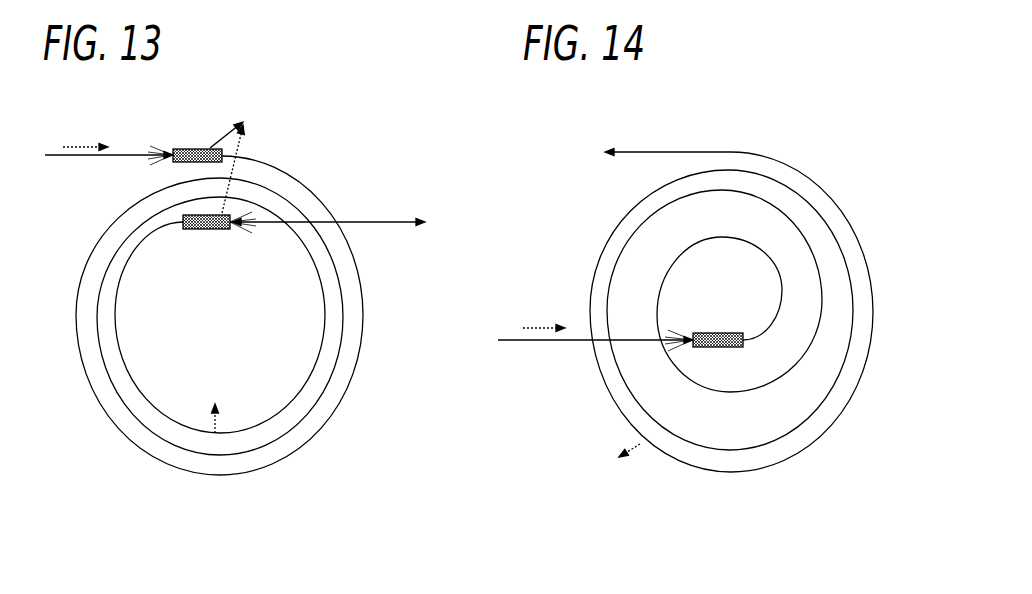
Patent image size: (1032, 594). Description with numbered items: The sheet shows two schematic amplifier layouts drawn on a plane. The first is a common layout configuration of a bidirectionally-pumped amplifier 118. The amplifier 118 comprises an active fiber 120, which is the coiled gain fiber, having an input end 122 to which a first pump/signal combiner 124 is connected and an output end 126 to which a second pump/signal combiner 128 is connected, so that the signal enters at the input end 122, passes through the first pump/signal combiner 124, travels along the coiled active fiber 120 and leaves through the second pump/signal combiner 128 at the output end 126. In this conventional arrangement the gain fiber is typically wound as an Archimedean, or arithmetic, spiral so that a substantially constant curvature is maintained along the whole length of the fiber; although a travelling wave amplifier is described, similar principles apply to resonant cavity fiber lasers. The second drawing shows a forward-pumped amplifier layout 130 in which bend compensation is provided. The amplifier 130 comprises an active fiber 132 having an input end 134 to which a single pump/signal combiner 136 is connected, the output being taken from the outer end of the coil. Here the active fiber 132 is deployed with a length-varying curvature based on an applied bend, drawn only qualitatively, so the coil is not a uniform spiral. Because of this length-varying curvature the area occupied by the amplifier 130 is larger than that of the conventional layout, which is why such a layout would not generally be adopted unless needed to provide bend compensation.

In FIG. 13, the bidirectionally-pumped amplifier 118 is at (324, 50).
In FIG. 13, the active fiber 120 is at (118, 337).
In FIG. 13, the input end 122 is at (142, 134).
In FIG. 13, the first pump/signal combiner 124 is at (188, 147).
In FIG. 13, the output end 126 is at (466, 205).
In FIG. 13, the second pump/signal combiner 128 is at (200, 230).
In FIG. 14, the forward-pumped amplifier layout 130 is at (830, 143).
In FIG. 14, the active fiber 132 is at (611, 237).
In FIG. 14, the input end 134 is at (470, 326).
In FIG. 14, the pump/signal combiner 136 is at (707, 333).